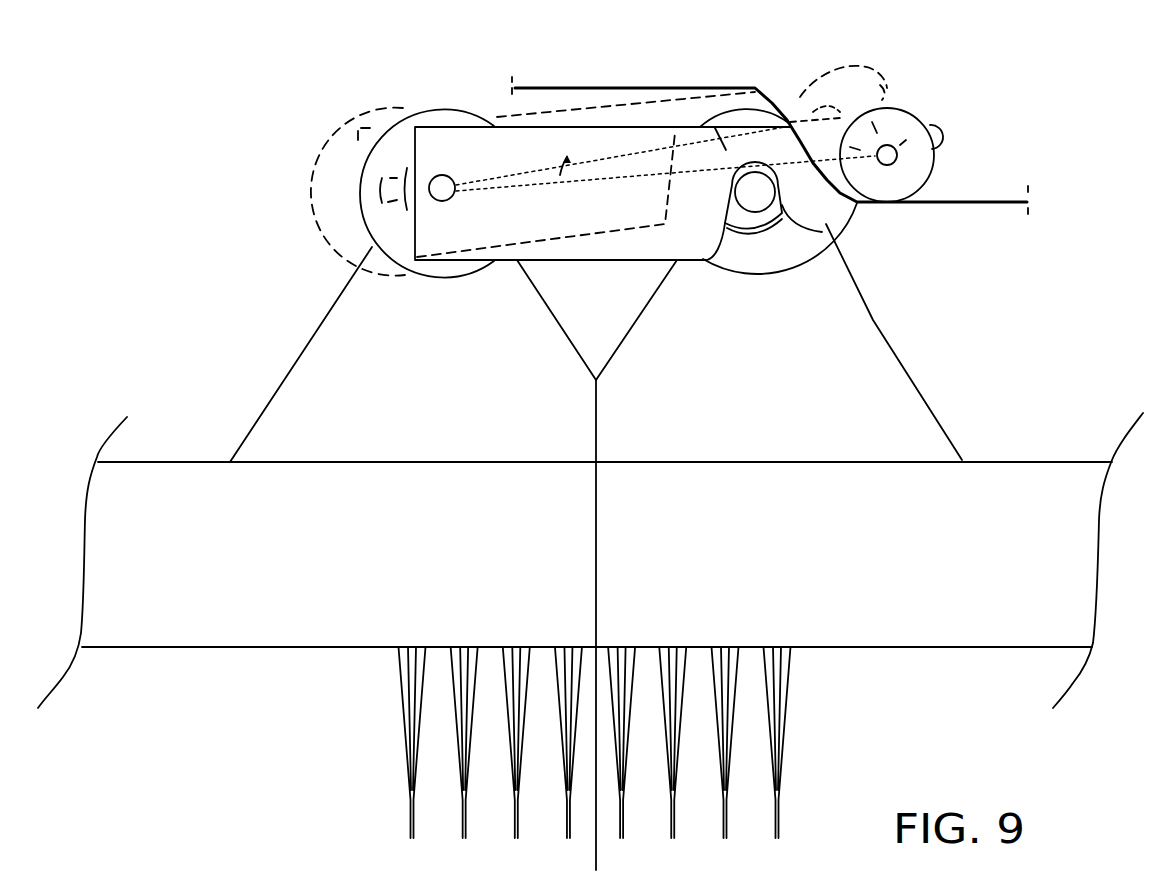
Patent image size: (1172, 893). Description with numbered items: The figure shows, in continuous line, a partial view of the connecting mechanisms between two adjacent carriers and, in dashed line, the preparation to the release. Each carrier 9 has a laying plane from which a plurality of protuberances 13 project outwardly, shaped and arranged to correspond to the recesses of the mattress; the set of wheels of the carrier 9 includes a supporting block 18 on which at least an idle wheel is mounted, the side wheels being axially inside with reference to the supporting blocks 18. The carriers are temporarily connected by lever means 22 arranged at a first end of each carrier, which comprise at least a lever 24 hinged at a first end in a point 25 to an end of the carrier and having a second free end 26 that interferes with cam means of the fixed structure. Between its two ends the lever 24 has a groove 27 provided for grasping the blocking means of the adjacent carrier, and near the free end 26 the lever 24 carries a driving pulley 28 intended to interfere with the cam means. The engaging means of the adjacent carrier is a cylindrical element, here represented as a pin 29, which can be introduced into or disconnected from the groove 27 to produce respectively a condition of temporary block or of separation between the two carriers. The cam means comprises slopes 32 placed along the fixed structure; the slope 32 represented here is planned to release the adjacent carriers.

The carrier 9 is at (302, 518).
The protuberances 13 is at (527, 647).
The supporting block 18 is at (333, 370).
The lever means 22 is at (305, 180).
The lever 24 is at (615, 252).
The hinge point 25 is at (442, 200).
The free end 26 is at (943, 133).
The groove 27 is at (780, 203).
The driving pulley 28 is at (898, 125).
The pin 29 is at (748, 205).
The slope 32 is at (752, 88).